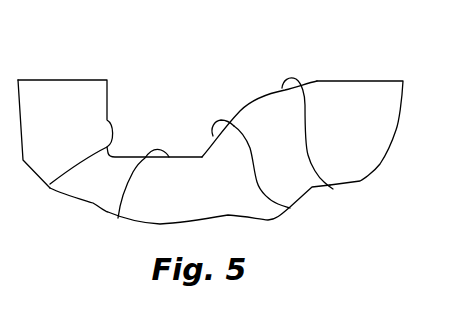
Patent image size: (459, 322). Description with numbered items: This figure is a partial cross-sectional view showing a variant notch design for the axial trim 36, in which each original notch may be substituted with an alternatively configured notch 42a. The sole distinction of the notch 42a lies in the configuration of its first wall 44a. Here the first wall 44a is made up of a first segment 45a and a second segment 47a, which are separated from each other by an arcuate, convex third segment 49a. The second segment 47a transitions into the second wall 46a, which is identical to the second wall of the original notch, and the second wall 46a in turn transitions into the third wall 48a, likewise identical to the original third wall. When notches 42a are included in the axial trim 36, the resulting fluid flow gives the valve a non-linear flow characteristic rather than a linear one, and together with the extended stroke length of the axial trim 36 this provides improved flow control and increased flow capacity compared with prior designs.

The axial trim 36 is at (352, 63).
The notch 42a is at (138, 122).
The first wall 44a is at (272, 82).
The first segment 45a is at (333, 189).
The second wall 46a is at (118, 218).
The second segment 47a is at (290, 208).
The third wall 48a is at (50, 184).
The third segment 49a is at (248, 104).